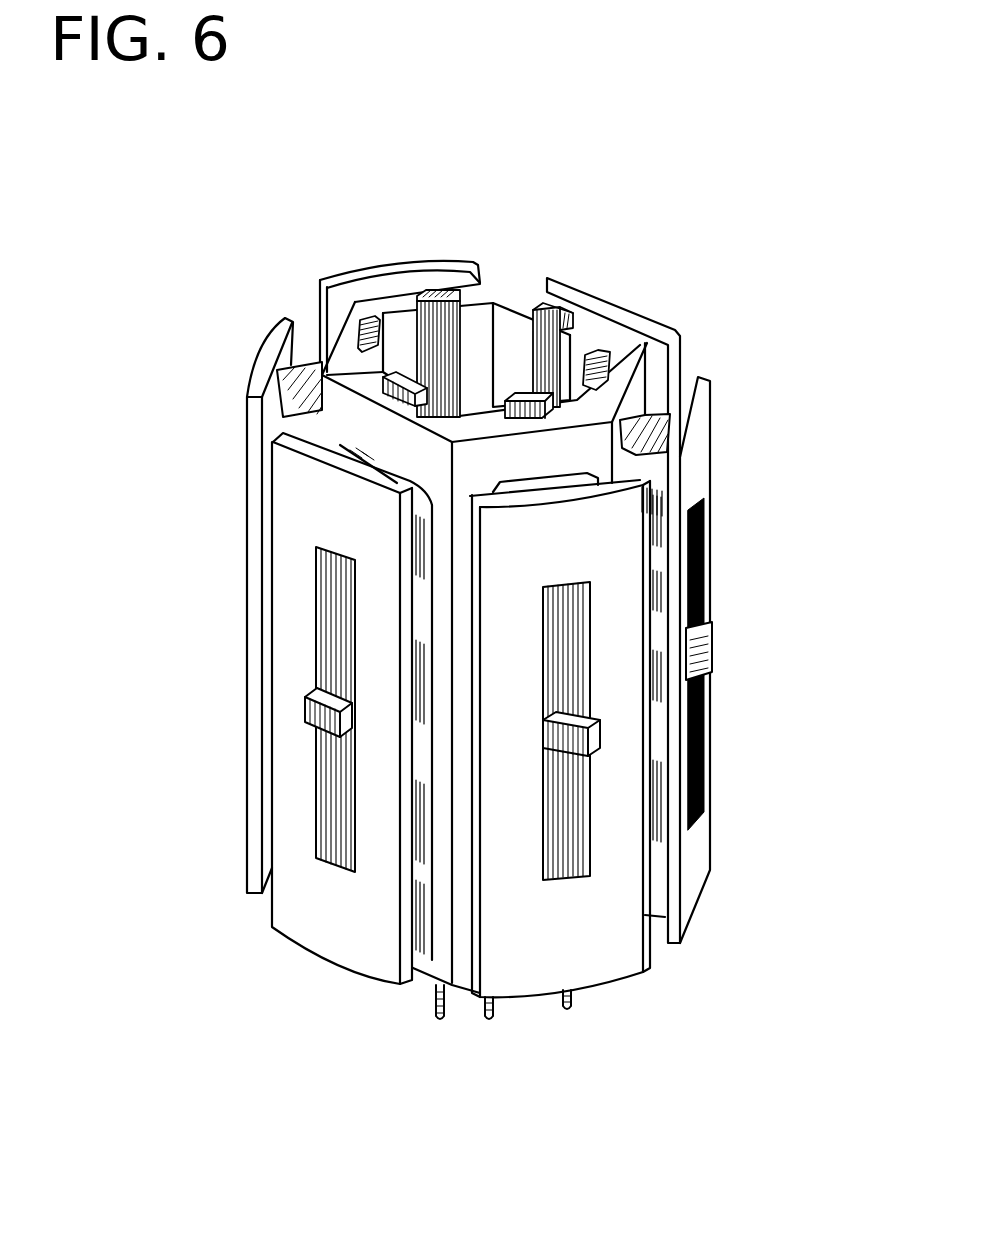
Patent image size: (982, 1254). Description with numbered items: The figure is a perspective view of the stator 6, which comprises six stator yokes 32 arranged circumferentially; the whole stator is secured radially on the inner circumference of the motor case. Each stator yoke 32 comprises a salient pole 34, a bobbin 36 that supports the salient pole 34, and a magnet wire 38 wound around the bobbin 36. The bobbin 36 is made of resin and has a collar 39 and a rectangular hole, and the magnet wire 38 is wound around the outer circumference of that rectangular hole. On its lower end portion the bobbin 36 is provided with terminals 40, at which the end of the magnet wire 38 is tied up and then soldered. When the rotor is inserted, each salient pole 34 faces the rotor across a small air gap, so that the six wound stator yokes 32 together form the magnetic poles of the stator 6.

The stator 6 is at (536, 246).
The stator yoke 32 is at (273, 627).
The salient pole 34 is at (330, 778).
The bobbin 36 is at (326, 413).
The magnet wire 38 is at (343, 453).
The collar 39 is at (305, 918).
The terminal 40 is at (433, 1010).